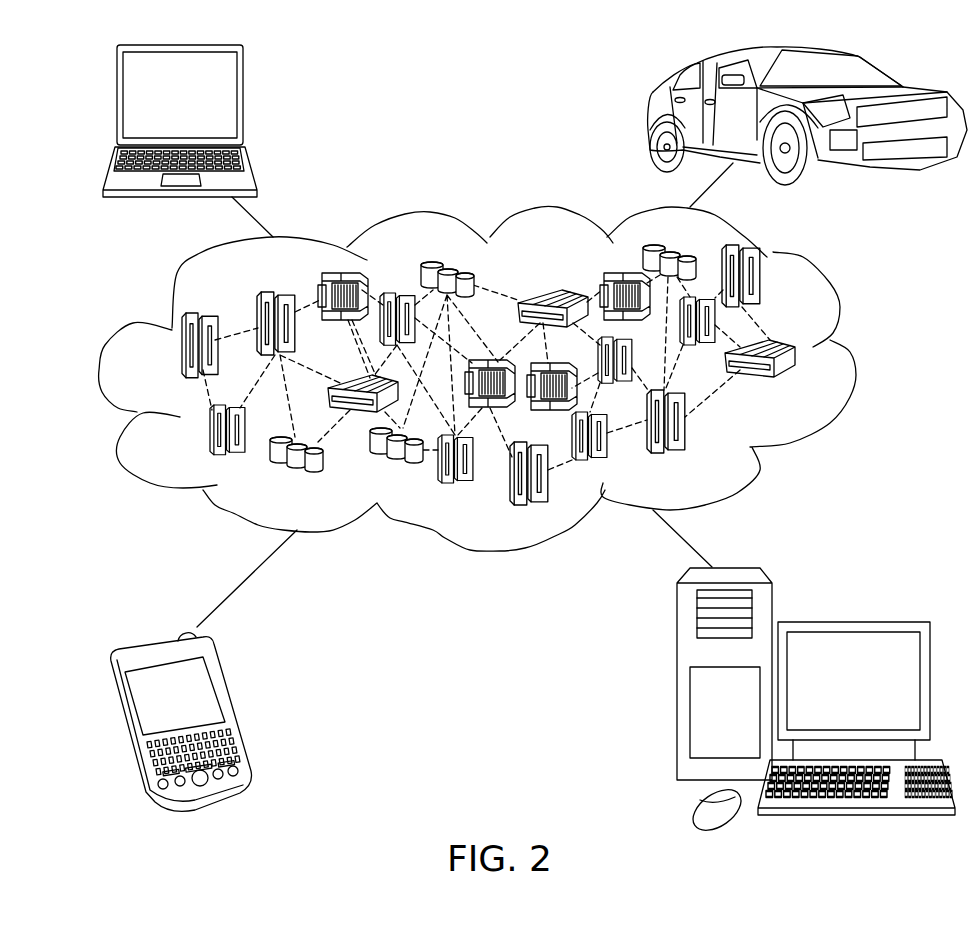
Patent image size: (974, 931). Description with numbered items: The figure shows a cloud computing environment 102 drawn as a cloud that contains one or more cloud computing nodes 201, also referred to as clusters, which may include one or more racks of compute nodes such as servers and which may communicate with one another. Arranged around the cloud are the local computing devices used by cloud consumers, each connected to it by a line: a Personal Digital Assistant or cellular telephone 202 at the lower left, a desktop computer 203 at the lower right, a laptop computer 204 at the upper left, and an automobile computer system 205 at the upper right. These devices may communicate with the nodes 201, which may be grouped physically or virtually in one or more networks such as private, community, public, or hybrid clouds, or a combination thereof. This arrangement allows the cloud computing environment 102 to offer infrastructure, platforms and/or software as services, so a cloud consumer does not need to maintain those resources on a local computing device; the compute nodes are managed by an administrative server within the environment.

The cloud computing environment 102 is at (852, 355).
The cloud computing nodes 201 is at (798, 382).
The Personal Digital Assistant (PDA) or cellular telephone 202 is at (242, 709).
The desktop computer 203 is at (852, 622).
The laptop computer 204 is at (243, 103).
The automobile computer system 205 is at (650, 113).